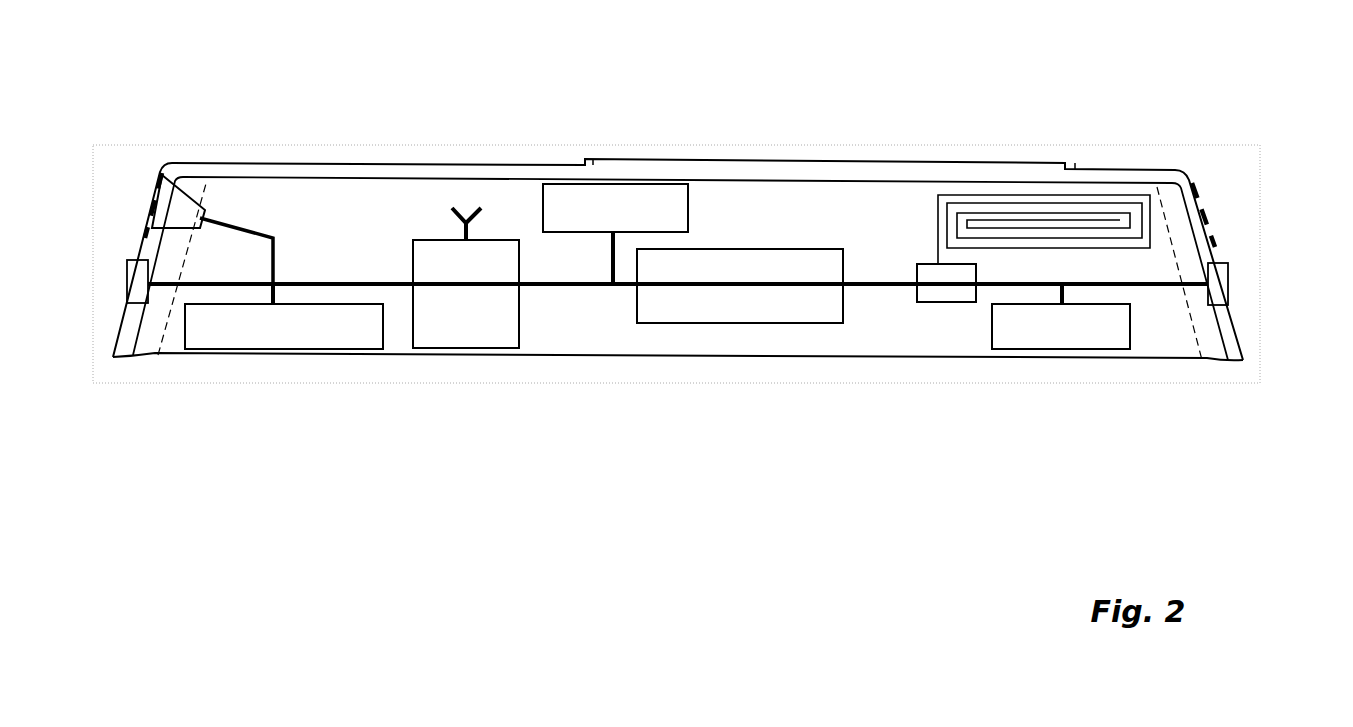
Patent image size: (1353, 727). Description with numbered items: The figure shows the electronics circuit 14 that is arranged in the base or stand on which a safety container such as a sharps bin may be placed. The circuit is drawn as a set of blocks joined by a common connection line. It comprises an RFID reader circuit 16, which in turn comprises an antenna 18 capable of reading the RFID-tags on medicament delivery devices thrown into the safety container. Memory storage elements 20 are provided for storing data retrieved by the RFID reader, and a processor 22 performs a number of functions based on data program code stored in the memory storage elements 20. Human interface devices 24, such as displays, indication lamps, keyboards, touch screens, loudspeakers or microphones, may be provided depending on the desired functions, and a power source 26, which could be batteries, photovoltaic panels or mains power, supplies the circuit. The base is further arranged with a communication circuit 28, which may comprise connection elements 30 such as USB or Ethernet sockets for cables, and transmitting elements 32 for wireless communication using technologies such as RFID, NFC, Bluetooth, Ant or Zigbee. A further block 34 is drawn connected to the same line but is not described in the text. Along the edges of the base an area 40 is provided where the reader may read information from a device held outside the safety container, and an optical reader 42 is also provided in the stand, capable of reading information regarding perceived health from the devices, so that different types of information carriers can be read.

The electronics circuit 14 is at (348, 258).
The RFID reader circuit 16 is at (929, 295).
The antenna 18 is at (1063, 198).
The memory storage elements 20 is at (1045, 340).
The processor 22 is at (723, 300).
The human interface devices 24 is at (1223, 281).
The power source 26 is at (258, 340).
The communication circuit 28 is at (449, 297).
The connection elements 30 is at (138, 260).
The transmitting elements 32 is at (462, 207).
The memory 34 is at (598, 221).
The area 40 is at (160, 175).
The optical reader 42 is at (172, 202).